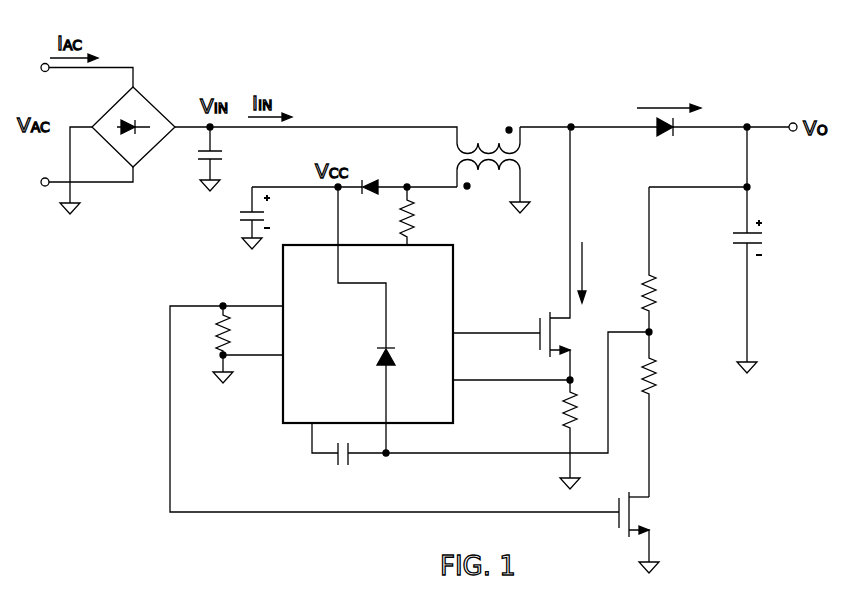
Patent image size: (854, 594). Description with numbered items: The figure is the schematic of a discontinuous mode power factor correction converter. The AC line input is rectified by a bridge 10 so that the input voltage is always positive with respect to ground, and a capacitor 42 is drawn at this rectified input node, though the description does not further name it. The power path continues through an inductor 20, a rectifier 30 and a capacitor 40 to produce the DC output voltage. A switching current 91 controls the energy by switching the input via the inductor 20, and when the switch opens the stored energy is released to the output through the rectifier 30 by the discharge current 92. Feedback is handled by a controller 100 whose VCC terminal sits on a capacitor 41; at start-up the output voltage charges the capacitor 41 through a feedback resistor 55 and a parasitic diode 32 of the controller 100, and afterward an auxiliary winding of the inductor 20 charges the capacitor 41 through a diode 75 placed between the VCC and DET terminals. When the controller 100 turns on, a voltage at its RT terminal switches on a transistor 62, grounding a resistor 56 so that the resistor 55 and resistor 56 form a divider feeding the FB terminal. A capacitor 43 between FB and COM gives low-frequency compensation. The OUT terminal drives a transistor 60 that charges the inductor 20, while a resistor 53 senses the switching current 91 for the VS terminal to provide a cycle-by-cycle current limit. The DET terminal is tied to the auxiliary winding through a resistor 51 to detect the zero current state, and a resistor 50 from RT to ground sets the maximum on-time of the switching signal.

The bridge 10 is at (163, 72).
The inductor 20 is at (490, 125).
The rectifier 30 is at (667, 141).
The parasitic diode 32 is at (372, 361).
The capacitor 40 is at (767, 239).
The capacitor 41 is at (234, 229).
The input capacitor 42 is at (197, 163).
The capacitor 43 is at (350, 468).
The resistor 50 is at (210, 332).
The resistor 51 is at (424, 219).
The resistor 53 is at (556, 414).
The resistor 55 is at (665, 298).
The resistor 56 is at (665, 378).
The transistor 60 is at (538, 320).
The transistor 62 is at (650, 511).
The diode 75 is at (369, 179).
The switching current 91 is at (587, 268).
The discharge current 92 is at (657, 104).
The controller 100 is at (462, 268).